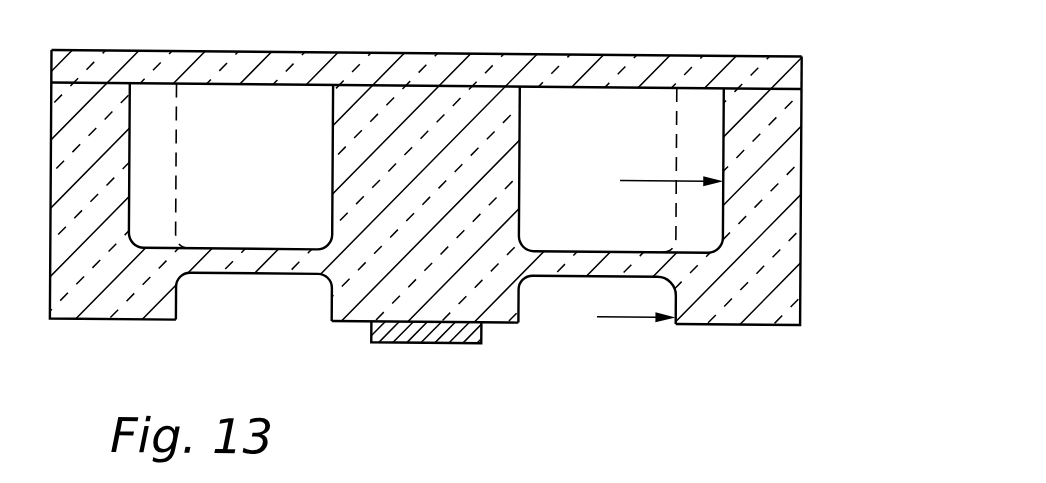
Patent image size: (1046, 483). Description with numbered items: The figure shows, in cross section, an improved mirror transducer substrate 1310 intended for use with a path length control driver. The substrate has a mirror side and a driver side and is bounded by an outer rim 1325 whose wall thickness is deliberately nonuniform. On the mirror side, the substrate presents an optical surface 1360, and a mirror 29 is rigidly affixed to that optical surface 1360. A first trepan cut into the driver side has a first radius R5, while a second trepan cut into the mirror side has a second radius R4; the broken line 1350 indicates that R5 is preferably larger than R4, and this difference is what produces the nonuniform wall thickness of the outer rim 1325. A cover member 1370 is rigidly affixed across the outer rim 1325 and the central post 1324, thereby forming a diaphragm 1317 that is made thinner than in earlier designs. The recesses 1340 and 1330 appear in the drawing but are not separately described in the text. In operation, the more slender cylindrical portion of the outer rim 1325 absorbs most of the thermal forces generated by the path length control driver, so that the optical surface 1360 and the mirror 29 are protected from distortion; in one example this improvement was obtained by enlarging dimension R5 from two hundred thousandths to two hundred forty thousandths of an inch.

The mirror transducer substrate 1310 is at (831, 216).
The diaphragm 1317 is at (622, 50).
The cover member 1370 is at (803, 67).
The optical surface 1360 is at (722, 319).
The outer rim 1325 is at (768, 294).
The central post 1324 is at (453, 218).
The left recess 1340 is at (280, 308).
The right cavity 1330 is at (596, 186).
The broken line 1350 is at (180, 162).
The mirror 29 is at (445, 342).
The first radius R5 is at (658, 176).
The second radius R4 is at (639, 312).